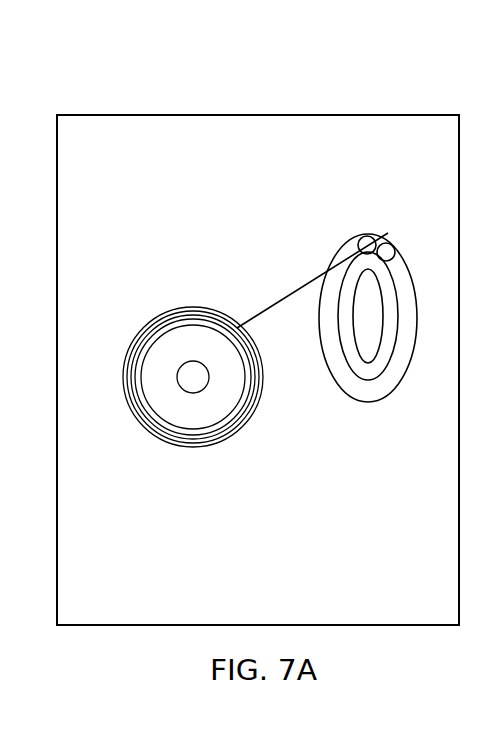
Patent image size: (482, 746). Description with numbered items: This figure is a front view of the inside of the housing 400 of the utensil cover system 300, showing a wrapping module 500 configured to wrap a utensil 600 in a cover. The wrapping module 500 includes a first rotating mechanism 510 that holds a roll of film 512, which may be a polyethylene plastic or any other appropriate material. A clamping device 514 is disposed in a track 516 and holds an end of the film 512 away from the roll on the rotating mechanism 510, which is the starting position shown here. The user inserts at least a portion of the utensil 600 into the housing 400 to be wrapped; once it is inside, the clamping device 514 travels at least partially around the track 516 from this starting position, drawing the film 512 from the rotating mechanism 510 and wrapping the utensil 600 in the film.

The system 300 is at (33, 140).
The housing 400 is at (243, 115).
The wrapping module 500 is at (252, 320).
The first rotating mechanism 510 is at (147, 402).
The film 512 is at (269, 310).
The clamping device 514 is at (365, 236).
The track 516 is at (336, 380).
The utensil 600 is at (378, 342).